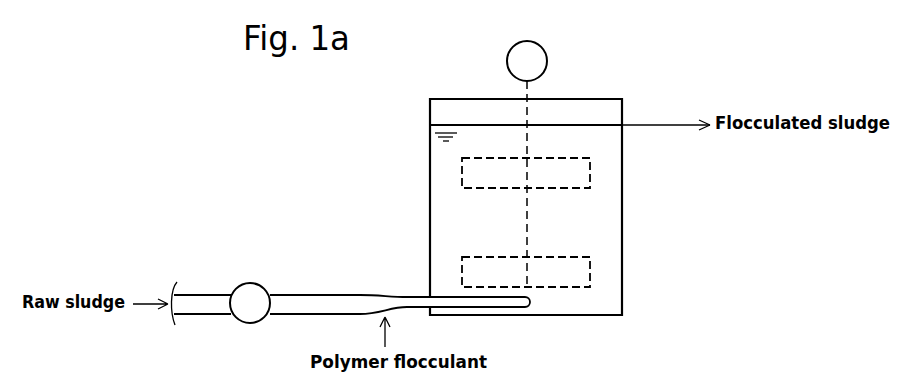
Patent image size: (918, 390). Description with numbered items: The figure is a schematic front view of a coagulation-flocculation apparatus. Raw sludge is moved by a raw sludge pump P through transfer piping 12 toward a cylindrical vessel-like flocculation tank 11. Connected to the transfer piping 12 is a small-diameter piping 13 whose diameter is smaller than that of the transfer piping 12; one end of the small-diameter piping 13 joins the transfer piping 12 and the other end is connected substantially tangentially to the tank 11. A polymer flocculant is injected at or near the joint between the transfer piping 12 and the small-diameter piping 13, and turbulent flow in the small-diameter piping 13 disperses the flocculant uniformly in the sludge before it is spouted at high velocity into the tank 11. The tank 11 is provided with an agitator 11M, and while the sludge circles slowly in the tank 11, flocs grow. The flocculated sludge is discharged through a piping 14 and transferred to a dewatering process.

The flocculation tank 11 is at (622, 263).
The agitator 11M is at (547, 53).
The transfer piping 12 is at (300, 294).
The small-diameter piping 13 is at (407, 292).
The piping 14 is at (653, 125).